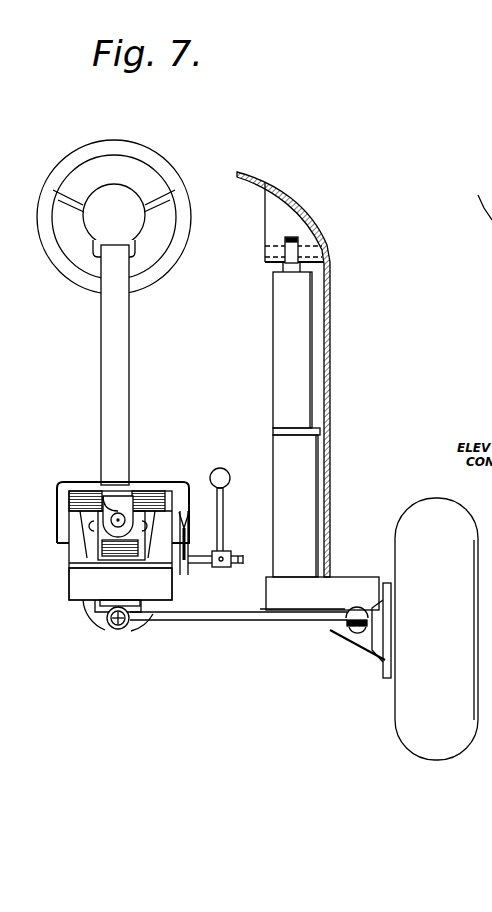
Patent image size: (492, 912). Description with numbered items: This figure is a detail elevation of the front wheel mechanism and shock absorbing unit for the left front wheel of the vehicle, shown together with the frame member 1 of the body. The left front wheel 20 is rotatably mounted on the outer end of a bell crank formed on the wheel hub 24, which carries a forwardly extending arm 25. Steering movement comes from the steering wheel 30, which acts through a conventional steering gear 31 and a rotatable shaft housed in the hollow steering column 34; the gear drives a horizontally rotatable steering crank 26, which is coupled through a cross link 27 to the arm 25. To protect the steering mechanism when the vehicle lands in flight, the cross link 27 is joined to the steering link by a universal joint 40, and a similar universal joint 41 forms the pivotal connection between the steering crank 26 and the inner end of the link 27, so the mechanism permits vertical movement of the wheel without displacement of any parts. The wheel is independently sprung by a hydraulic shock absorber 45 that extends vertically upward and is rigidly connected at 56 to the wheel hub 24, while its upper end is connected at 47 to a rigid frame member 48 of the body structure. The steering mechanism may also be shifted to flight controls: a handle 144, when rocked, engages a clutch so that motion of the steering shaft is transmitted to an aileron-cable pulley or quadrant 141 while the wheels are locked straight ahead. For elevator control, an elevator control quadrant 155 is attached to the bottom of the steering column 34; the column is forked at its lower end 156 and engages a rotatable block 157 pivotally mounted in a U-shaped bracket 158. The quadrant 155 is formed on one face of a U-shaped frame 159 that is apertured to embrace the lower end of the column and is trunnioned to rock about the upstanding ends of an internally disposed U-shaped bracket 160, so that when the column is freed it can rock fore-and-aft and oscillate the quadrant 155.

The frame hood 1 is at (332, 323).
The left front wheel 20 is at (418, 505).
The wheel hub 24 is at (379, 642).
The forwardly extending arm 25 is at (352, 629).
The steering crank 26 is at (108, 627).
The cross link 27 is at (222, 624).
The steering wheel 30 is at (82, 157).
The steering gear 31 is at (150, 584).
The steering column 34 is at (100, 350).
The universal joint 40 is at (333, 630).
The universal joint 41 is at (118, 632).
The hydraulic shock absorber 45 is at (273, 334).
The connection 47 is at (292, 252).
The rigid frame member 48 is at (265, 212).
The connection 56 is at (352, 583).
The aileron-cable pulley 141 is at (96, 609).
The handle 144 is at (222, 504).
The elevator control quadrant 155 is at (184, 570).
The forked lower end 156 is at (112, 526).
The rotatable block 157 is at (118, 537).
The U-shaped bracket 158 is at (97, 518).
The U-shaped frame 159 is at (73, 483).
The internally disposed U-shaped bracket 160 is at (161, 513).